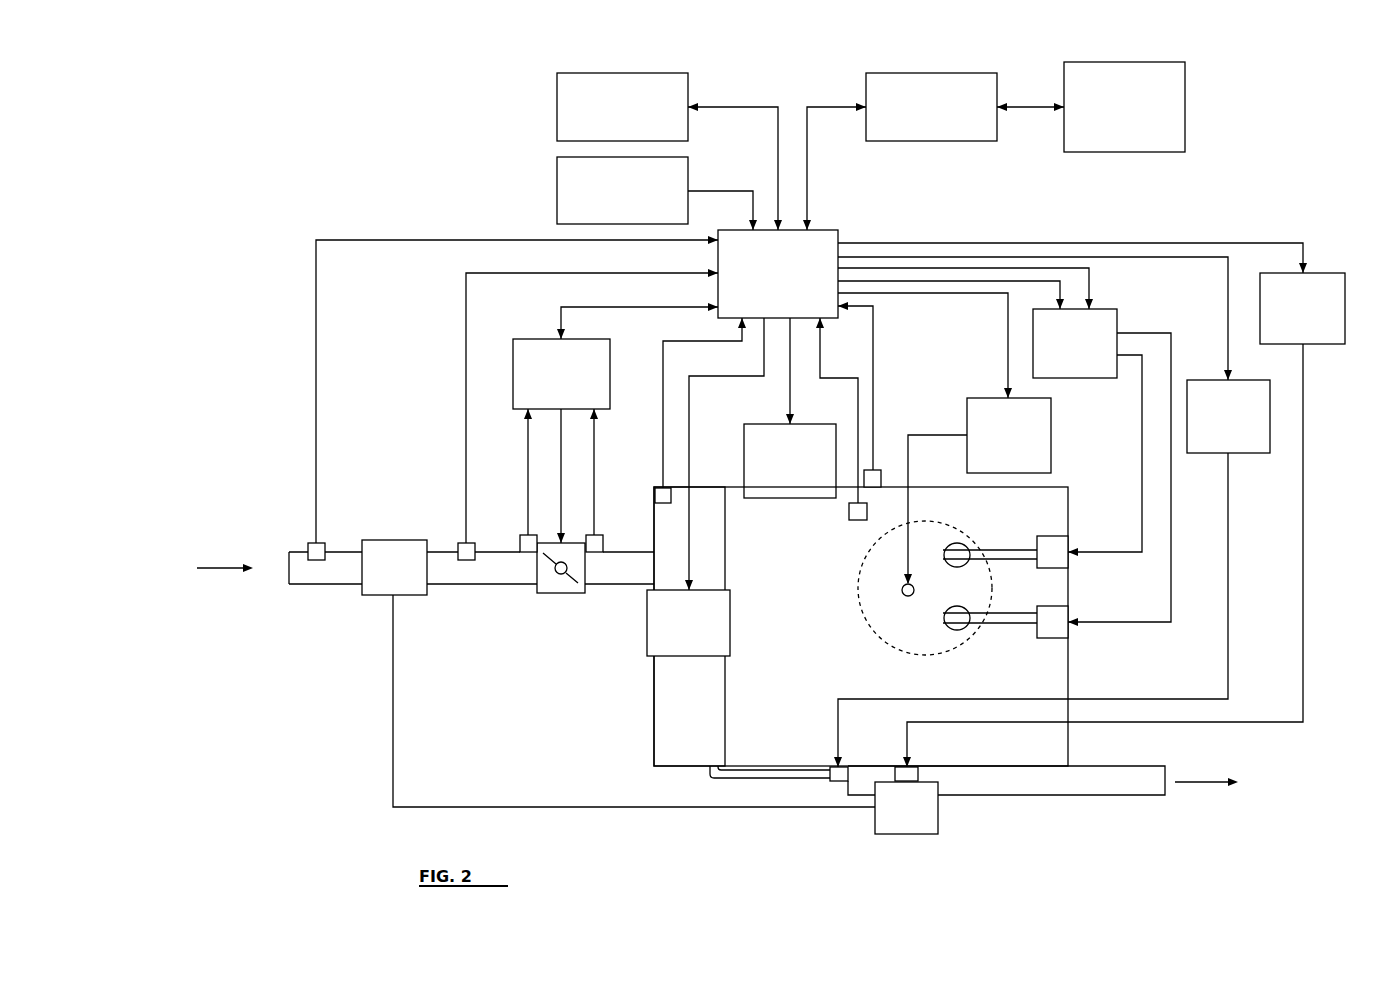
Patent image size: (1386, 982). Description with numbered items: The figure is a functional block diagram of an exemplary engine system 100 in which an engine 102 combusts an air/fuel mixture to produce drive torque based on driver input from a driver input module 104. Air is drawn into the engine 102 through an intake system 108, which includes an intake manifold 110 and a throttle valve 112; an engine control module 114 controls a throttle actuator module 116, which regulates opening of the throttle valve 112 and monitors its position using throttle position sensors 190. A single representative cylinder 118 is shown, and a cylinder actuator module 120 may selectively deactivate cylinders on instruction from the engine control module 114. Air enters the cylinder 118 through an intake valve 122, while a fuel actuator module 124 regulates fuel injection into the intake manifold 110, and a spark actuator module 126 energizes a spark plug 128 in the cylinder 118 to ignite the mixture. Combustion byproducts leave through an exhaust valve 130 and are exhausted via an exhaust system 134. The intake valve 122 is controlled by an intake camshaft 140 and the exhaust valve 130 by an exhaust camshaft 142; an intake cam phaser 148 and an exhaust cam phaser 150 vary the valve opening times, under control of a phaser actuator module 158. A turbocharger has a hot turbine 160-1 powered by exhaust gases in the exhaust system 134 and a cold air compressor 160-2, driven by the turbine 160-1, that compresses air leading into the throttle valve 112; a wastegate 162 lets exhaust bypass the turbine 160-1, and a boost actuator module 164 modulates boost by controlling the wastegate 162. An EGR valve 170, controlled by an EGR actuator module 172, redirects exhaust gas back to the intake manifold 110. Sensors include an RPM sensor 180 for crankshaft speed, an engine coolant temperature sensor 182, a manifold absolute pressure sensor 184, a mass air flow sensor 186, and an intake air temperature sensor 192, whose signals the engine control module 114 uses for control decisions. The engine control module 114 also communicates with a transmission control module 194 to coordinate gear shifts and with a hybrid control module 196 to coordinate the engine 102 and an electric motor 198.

The engine system 100 is at (258, 127).
The engine 102 is at (1070, 489).
The driver input module 104 is at (557, 185).
The intake system 108 is at (640, 590).
The intake manifold 110 is at (652, 700).
The throttle valve 112 is at (558, 593).
The engine control module 114 is at (840, 231).
The throttle actuator module 116 is at (537, 339).
The cylinder 118 is at (888, 650).
The cylinder actuator module 120 is at (803, 424).
The intake valve 122 is at (960, 543).
The fuel actuator module 124 is at (718, 656).
The spark actuator module 126 is at (1051, 435).
The spark plug 128 is at (902, 590).
The exhaust valve 130 is at (957, 632).
The exhaust system 134 is at (1138, 799).
The intake camshaft 140 is at (1010, 550).
The exhaust camshaft 142 is at (1015, 624).
The intake cam phaser 148 is at (1052, 536).
The exhaust cam phaser 150 is at (1056, 639).
The phaser actuator module 158 is at (1117, 313).
The turbine 160-1 is at (938, 815).
The compressor 160-2 is at (376, 595).
The wastegate 162 is at (918, 770).
The boost actuator module 164 is at (1325, 344).
The EGR valve 170 is at (836, 783).
The EGR actuator module 172 is at (1250, 453).
The RPM sensor 180 is at (877, 470).
The engine coolant temperature sensor 182 is at (858, 522).
The manifold absolute pressure sensor 184 is at (656, 489).
The mass air flow sensor 186 is at (462, 543).
The throttle position sensor 190 is at (528, 560).
The intake air temperature sensor 192 is at (310, 543).
The transmission control module 194 is at (557, 98).
The hybrid control module 196 is at (931, 141).
The electric motor 198 is at (1135, 152).